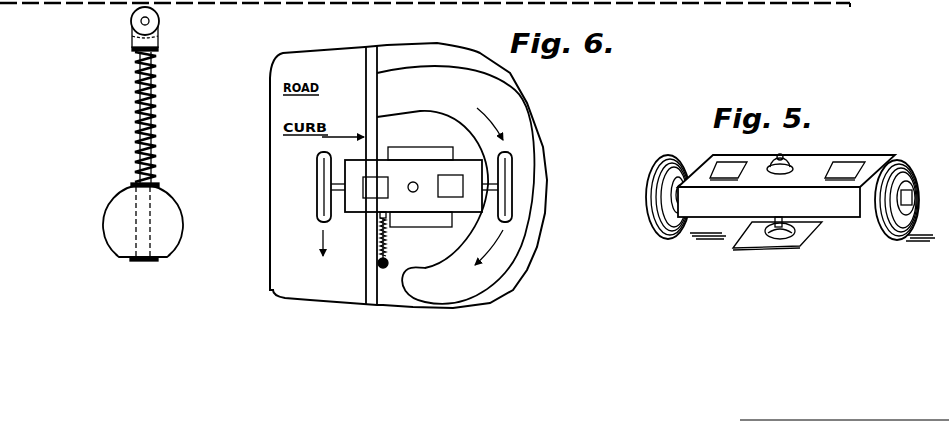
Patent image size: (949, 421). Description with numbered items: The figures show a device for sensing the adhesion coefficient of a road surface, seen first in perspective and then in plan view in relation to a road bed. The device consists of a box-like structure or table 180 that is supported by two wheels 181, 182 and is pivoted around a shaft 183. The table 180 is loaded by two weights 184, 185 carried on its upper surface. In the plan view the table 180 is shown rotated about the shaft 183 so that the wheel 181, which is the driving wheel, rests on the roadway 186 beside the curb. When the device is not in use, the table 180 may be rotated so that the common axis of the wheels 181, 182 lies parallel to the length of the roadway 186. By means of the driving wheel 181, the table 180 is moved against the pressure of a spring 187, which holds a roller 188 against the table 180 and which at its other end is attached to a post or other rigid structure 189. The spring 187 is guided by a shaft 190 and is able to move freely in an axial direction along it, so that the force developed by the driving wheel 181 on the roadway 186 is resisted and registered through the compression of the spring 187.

In FIG. 5, the table 180 is at (817, 155).
In FIG. 5, the driving wheel 181 is at (653, 225).
In FIG. 5, the wheel 182 is at (873, 232).
In FIG. 5, the shaft 183 is at (786, 156).
In FIG. 5, the weight 184 is at (733, 157).
In FIG. 5, the weight 185 is at (855, 160).
In FIG. 6, the roadway 186 is at (283, 242).
In FIG. 6, the spring 187 is at (158, 163).
In FIG. 6, the roller 188 is at (160, 24).
In FIG. 6, the post 189 is at (180, 212).
In FIG. 6, the shaft 190 is at (156, 76).